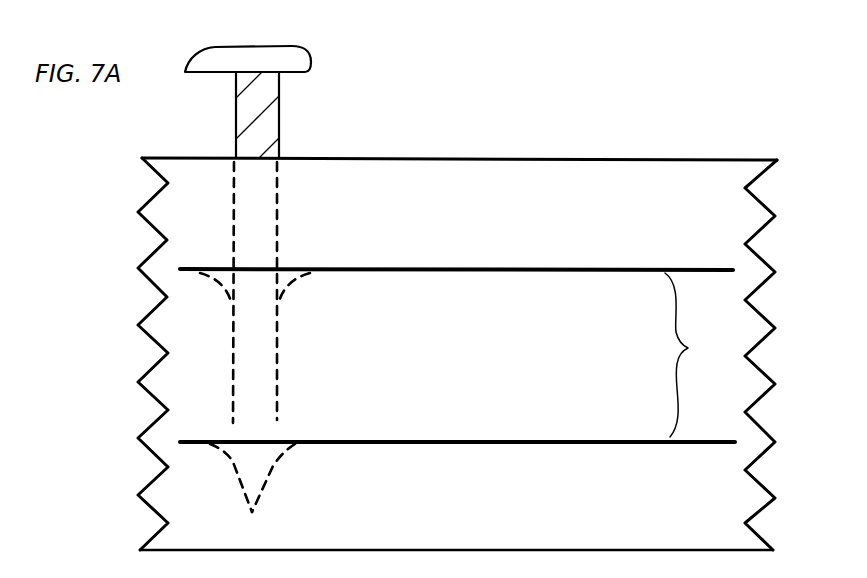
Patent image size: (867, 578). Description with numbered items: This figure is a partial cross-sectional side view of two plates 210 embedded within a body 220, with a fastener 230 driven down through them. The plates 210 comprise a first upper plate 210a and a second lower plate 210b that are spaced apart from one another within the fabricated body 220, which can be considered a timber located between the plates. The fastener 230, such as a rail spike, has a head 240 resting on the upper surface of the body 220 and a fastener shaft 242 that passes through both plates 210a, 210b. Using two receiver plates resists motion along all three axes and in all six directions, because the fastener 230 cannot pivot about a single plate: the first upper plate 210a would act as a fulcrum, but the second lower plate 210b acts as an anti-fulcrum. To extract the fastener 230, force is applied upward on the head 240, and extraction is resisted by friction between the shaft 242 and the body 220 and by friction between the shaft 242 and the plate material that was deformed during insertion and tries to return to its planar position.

The body 220 is at (493, 175).
The plates 210 is at (701, 355).
The first upper plate 210a is at (493, 266).
The second lower plate 210b is at (513, 438).
The fastener 230 is at (301, 111).
The head 240 is at (263, 62).
The fastener shaft 242 is at (260, 137).